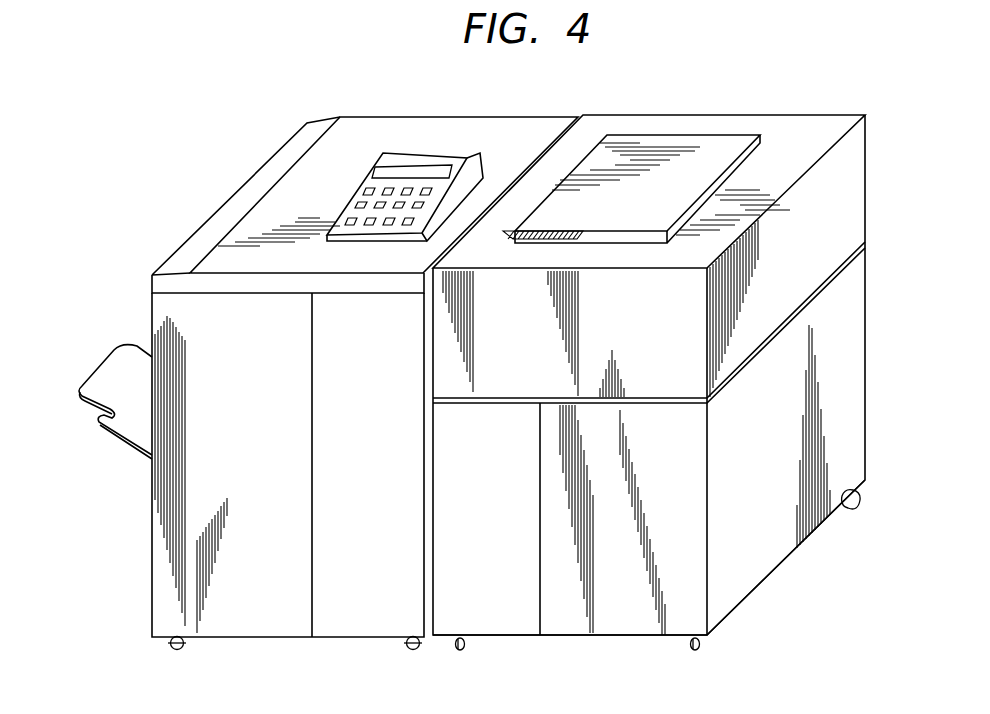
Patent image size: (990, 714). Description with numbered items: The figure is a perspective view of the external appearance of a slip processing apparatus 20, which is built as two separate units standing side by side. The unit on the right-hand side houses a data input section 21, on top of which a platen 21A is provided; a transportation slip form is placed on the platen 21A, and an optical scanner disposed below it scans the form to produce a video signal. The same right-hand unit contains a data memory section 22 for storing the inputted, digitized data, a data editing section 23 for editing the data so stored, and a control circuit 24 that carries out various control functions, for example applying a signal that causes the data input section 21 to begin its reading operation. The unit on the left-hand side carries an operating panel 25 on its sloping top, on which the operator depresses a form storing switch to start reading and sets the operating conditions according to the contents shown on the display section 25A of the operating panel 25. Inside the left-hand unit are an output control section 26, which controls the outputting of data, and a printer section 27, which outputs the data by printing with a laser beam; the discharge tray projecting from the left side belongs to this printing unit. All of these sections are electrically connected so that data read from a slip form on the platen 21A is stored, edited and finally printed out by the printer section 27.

The slip processing apparatus 20 is at (702, 380).
The data input section 21 is at (857, 185).
The platen 21A is at (720, 140).
The data memory section 22 is at (505, 627).
The data editing section 23 is at (738, 585).
The control circuit 24 is at (786, 480).
The operating panel 25 is at (422, 180).
The display section 25A is at (395, 172).
The output control section 26 is at (362, 625).
The printer section 27 is at (163, 543).